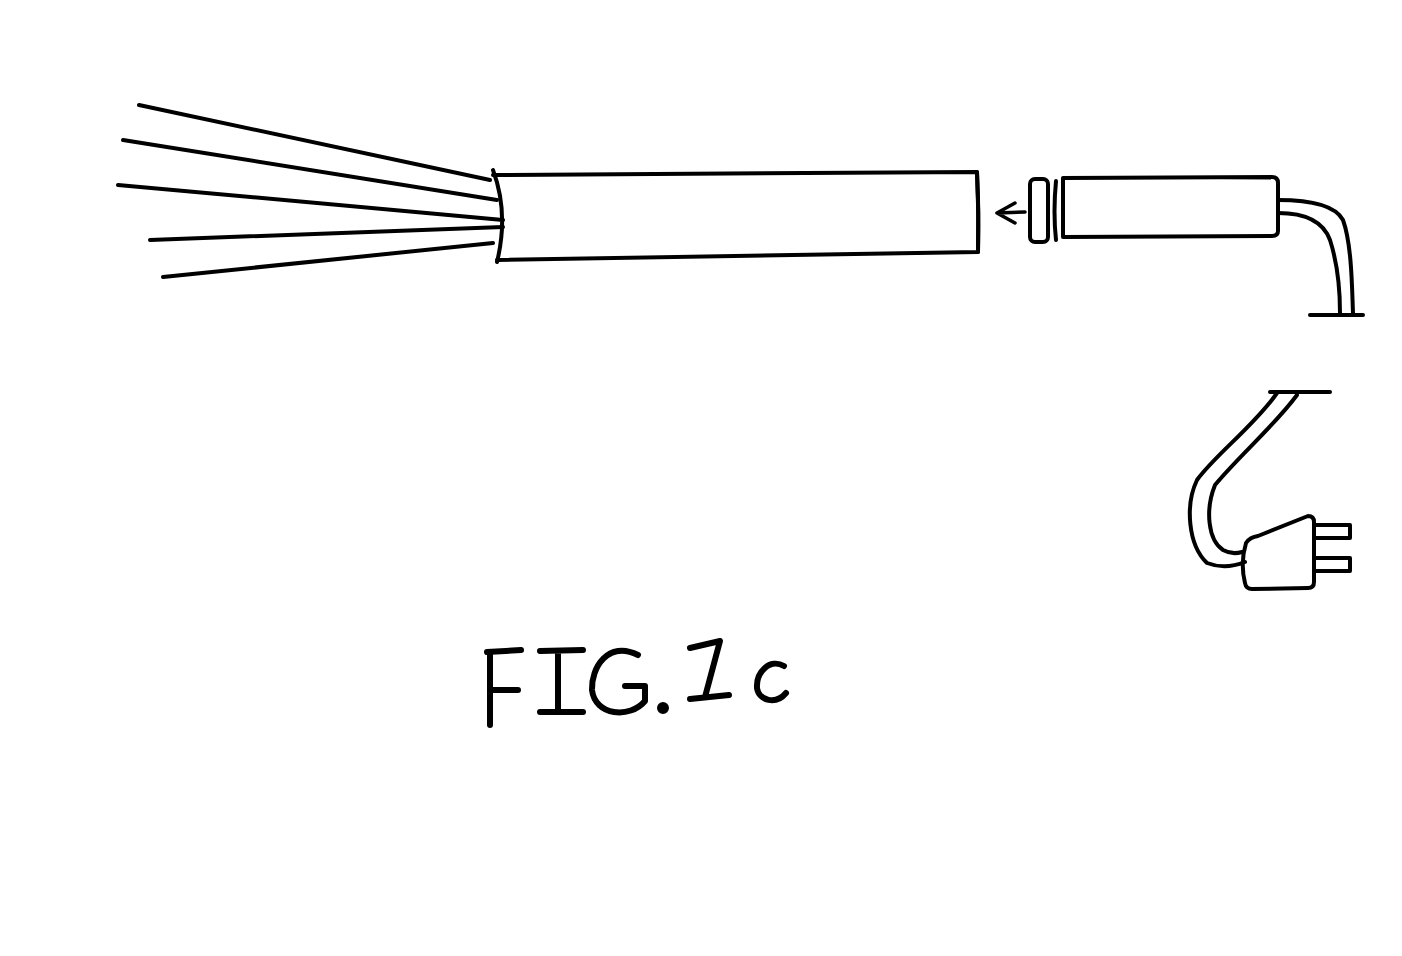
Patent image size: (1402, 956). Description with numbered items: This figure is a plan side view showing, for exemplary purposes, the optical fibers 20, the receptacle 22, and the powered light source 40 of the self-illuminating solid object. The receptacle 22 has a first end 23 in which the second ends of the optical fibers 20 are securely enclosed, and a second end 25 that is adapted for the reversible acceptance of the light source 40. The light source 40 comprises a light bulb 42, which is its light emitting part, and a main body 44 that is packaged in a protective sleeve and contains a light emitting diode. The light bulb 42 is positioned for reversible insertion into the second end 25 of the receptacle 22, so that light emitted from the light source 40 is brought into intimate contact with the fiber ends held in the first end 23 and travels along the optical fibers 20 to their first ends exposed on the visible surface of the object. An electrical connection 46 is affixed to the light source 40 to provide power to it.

The optical fibers 20 is at (238, 122).
The receptacle 22 is at (713, 284).
The first end of receptacle 23 is at (497, 262).
The second end of receptacle 25 is at (965, 255).
The light source 40 is at (1137, 140).
The light bulb 42 is at (1040, 178).
The main body of light source 44 is at (1153, 177).
The electrical connection 46 is at (1293, 214).